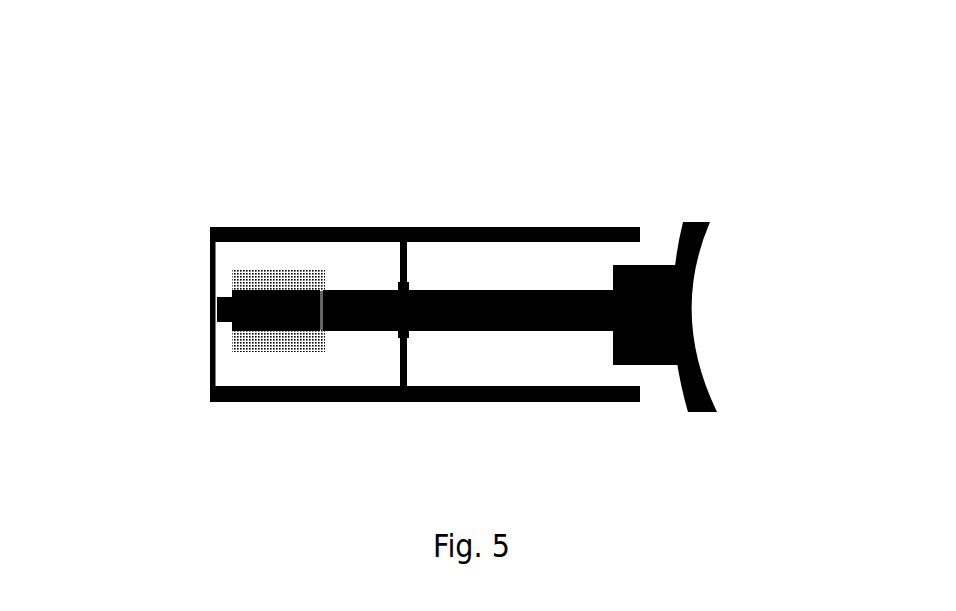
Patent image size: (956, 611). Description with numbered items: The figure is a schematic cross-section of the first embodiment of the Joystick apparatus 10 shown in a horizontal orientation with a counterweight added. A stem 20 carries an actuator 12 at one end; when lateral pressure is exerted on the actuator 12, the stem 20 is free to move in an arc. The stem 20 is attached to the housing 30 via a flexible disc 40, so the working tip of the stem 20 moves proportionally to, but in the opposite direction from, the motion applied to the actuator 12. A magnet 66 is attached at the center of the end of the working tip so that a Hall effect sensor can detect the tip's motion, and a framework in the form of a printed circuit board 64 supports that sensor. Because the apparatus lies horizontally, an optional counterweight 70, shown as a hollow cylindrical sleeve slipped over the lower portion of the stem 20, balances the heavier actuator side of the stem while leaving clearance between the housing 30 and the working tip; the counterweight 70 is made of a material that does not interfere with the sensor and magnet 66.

The Joystick apparatus 10 is at (654, 101).
The actuator 12 is at (712, 225).
The stem 20 is at (355, 291).
The housing 30 is at (542, 228).
The flexible disc 40 is at (407, 272).
The printed circuit board 64 is at (210, 280).
The magnet 66 is at (222, 297).
The counterweight 70 is at (285, 280).